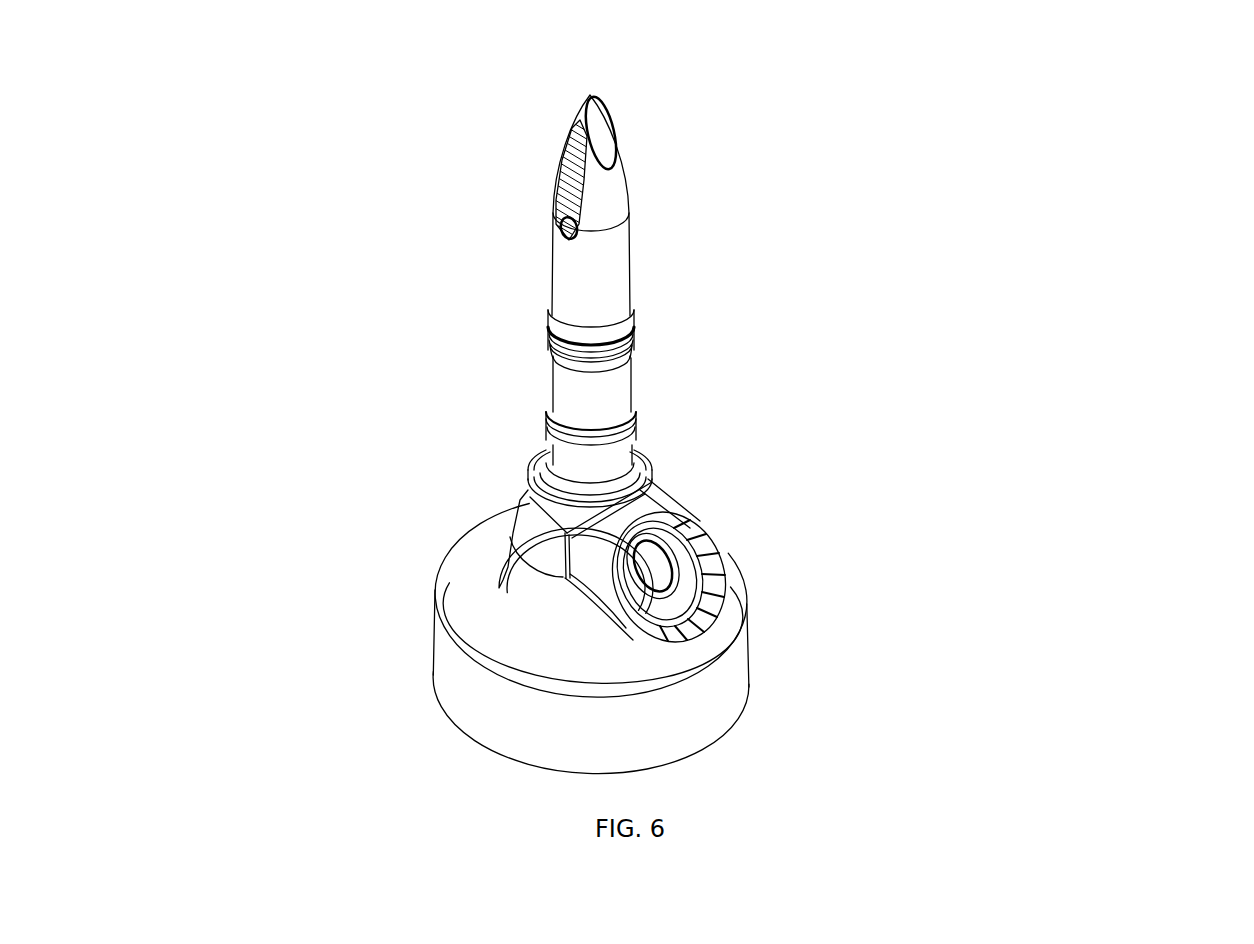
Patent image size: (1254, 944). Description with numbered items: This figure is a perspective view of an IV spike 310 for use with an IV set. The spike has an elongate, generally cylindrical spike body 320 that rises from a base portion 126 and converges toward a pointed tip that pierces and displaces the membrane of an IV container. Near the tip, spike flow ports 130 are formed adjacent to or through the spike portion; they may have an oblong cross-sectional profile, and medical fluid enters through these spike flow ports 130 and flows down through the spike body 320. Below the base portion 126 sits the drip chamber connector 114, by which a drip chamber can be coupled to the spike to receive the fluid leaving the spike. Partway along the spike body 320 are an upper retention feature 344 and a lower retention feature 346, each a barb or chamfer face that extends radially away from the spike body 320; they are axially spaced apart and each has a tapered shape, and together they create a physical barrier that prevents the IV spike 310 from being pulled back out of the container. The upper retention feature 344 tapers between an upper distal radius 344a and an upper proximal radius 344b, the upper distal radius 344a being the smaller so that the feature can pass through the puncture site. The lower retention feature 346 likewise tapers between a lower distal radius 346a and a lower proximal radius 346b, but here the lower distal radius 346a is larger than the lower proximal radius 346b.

The IV spike 310 is at (1008, 123).
The spike flow ports 130 is at (613, 130).
The spike body 320 is at (628, 232).
The upper retention feature 344 is at (551, 310).
The upper distal radius 344a is at (563, 313).
The upper proximal radius 344b is at (548, 337).
The lower retention feature 346 is at (559, 382).
The lower distal radius 346a is at (555, 355).
The lower proximal radius 346b is at (590, 370).
The base portion 126 is at (648, 468).
The drip chamber connector 114 is at (752, 690).